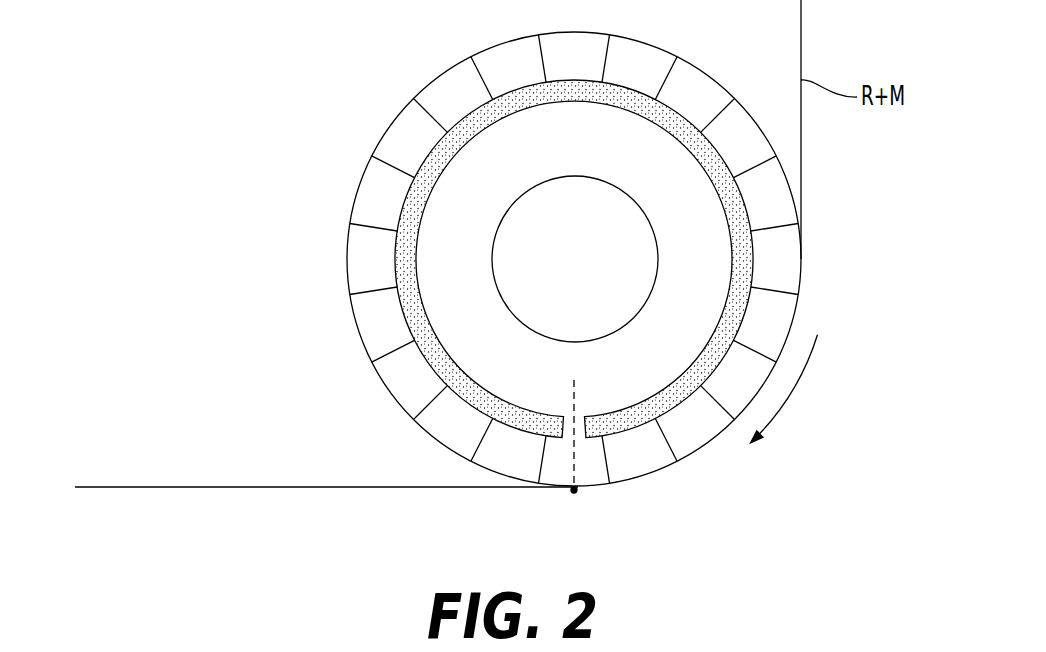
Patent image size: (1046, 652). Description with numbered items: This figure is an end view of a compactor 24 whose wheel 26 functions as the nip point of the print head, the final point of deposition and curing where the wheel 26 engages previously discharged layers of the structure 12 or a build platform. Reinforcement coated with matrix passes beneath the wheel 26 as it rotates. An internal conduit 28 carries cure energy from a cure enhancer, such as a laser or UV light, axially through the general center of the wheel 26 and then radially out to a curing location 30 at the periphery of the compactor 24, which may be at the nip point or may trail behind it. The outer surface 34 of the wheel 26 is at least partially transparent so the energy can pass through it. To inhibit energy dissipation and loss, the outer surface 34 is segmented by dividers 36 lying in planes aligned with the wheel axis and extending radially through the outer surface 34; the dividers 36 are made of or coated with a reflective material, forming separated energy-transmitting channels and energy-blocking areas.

The structure 12 is at (211, 488).
The compactor 24 is at (279, 113).
The wheel 26 is at (358, 334).
The internal conduit 28 is at (585, 271).
The curing location 30 is at (577, 491).
The outer surface 34 is at (400, 387).
The divider 36 is at (427, 408).